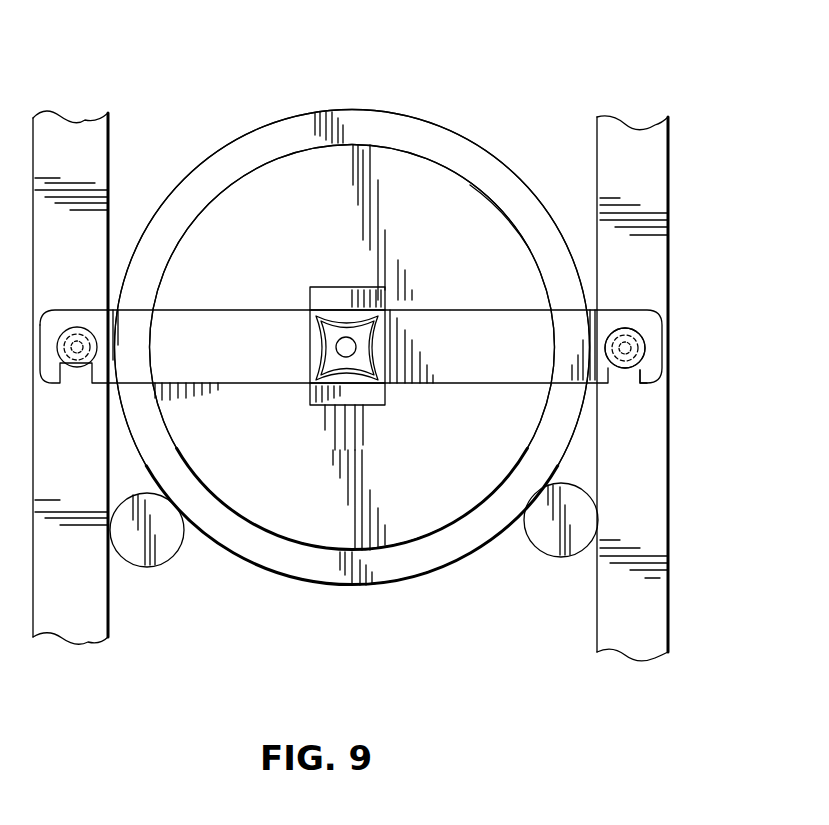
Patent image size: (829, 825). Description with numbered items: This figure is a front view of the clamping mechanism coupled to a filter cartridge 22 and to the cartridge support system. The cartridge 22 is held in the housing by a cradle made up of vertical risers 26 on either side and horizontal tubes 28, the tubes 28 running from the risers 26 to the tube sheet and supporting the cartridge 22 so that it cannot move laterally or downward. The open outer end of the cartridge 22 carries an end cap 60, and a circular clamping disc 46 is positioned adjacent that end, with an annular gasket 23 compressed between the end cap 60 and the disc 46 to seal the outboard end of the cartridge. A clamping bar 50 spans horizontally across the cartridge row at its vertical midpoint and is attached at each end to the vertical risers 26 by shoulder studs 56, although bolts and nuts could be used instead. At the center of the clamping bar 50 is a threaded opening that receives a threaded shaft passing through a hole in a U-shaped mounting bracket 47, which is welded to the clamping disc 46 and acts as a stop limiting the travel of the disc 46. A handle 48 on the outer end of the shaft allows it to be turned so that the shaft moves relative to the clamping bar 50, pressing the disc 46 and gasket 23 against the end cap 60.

The filter cartridge 22 is at (437, 122).
The gasket 23 is at (470, 185).
The vertical riser 26 is at (668, 550).
The horizontal tube 28 is at (533, 545).
The clamping disc 46 is at (495, 228).
The mounting bracket 47 is at (355, 295).
The handle 48 is at (328, 322).
The clamping bar 50 is at (255, 322).
The shoulder stud 56 is at (628, 385).
The end cap 60 is at (260, 135).